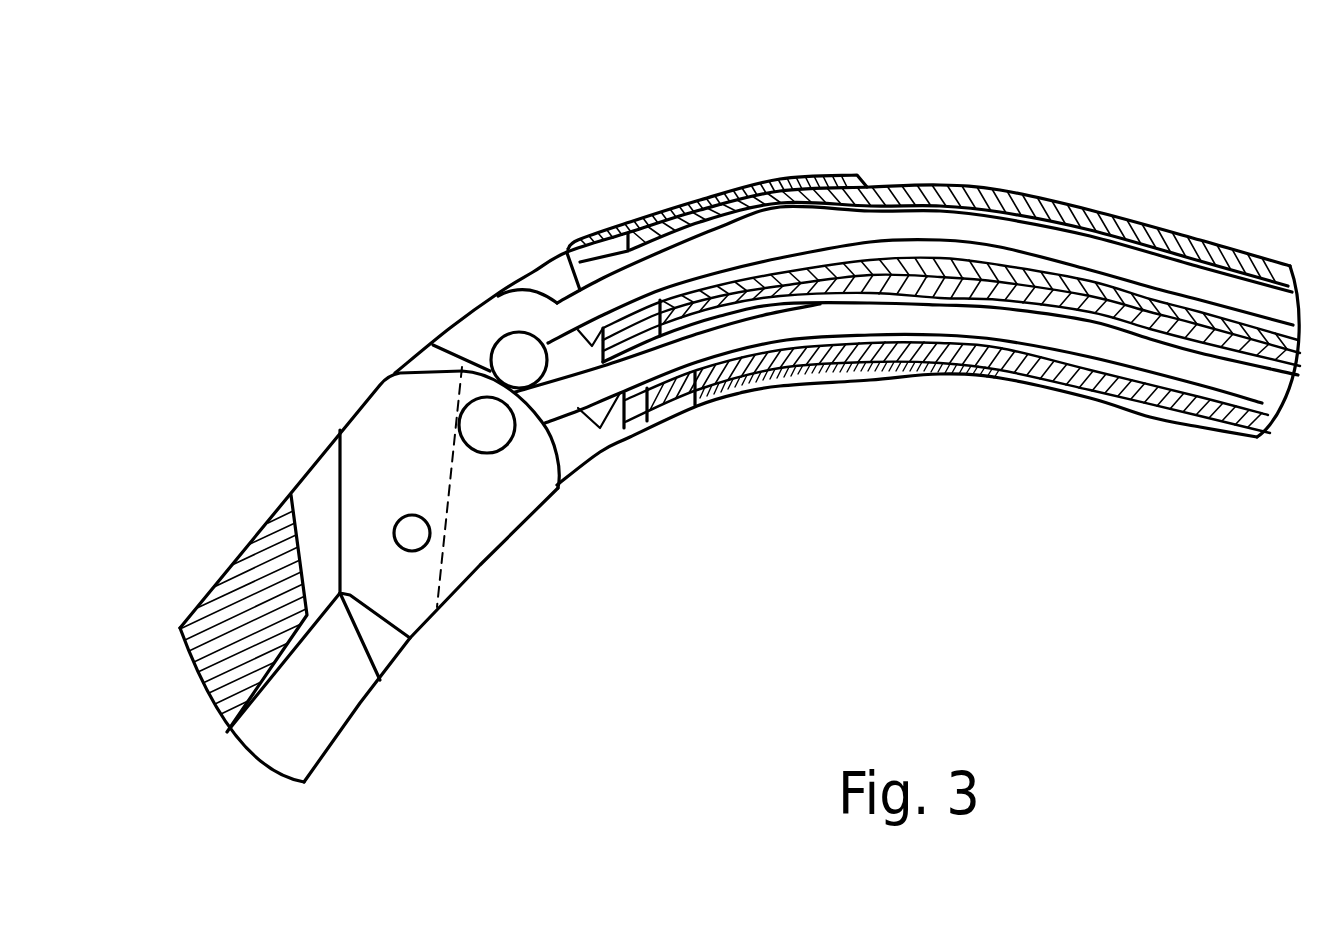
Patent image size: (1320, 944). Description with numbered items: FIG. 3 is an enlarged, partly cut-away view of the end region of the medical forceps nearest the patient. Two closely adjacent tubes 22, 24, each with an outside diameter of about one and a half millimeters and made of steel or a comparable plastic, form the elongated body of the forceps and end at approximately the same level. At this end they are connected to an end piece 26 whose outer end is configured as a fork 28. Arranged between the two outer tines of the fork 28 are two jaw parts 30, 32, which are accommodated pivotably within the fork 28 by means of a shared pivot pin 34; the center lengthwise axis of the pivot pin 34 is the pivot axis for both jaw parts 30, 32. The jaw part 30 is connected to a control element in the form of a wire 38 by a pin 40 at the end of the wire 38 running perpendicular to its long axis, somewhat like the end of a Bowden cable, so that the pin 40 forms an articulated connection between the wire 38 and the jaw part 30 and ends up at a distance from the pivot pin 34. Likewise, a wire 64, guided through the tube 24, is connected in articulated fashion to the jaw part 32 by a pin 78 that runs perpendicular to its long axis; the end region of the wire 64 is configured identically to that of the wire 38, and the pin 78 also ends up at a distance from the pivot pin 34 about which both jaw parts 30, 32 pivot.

The tube 22 is at (1170, 228).
The tube 24 is at (1212, 426).
The end piece 26 is at (698, 412).
The fork 28 is at (548, 280).
The jaw part 30 is at (258, 558).
The jaw part 32 is at (330, 690).
The pivot pin 34 is at (413, 538).
The wire 38 is at (888, 218).
The pin 40 is at (503, 352).
The wire 64 is at (1080, 342).
The pin 78 is at (490, 437).